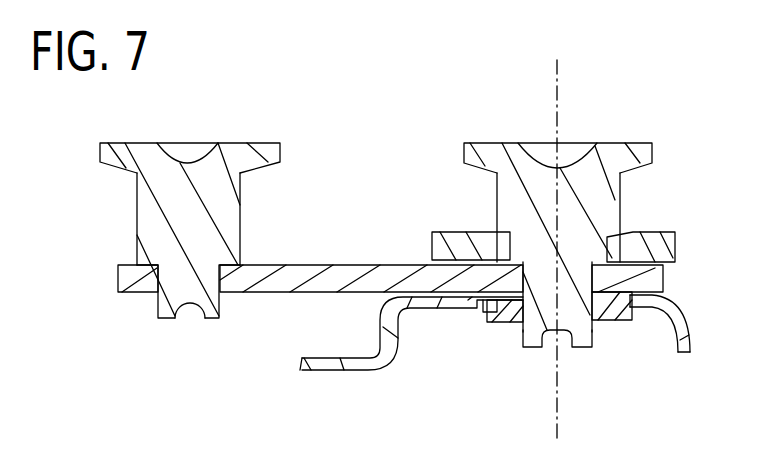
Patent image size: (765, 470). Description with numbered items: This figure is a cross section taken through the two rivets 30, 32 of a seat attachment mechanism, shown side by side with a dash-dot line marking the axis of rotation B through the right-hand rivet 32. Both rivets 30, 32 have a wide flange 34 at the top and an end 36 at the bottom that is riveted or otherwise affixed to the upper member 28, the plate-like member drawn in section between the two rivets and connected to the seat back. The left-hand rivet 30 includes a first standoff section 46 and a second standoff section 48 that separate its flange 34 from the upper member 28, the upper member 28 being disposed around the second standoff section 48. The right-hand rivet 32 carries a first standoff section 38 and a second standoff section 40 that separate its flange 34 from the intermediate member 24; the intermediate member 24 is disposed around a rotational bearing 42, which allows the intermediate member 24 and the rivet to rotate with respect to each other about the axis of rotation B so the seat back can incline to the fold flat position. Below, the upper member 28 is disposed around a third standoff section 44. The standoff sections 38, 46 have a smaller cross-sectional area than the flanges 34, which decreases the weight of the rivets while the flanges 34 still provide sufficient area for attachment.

The intermediate member 24 is at (670, 242).
The upper member 28 is at (133, 282).
The rivet 30 is at (170, 216).
The rivet 32 is at (548, 194).
The flange 34 is at (99, 148).
The end 36 is at (165, 322).
The first standoff section 38 is at (507, 188).
The second standoff section 40 is at (583, 230).
The rotational bearing 42 is at (507, 247).
The third standoff section 44 is at (537, 322).
The first standoff section 46 is at (152, 215).
The second standoff section 48 is at (207, 314).
The axis of rotation B is at (557, 115).